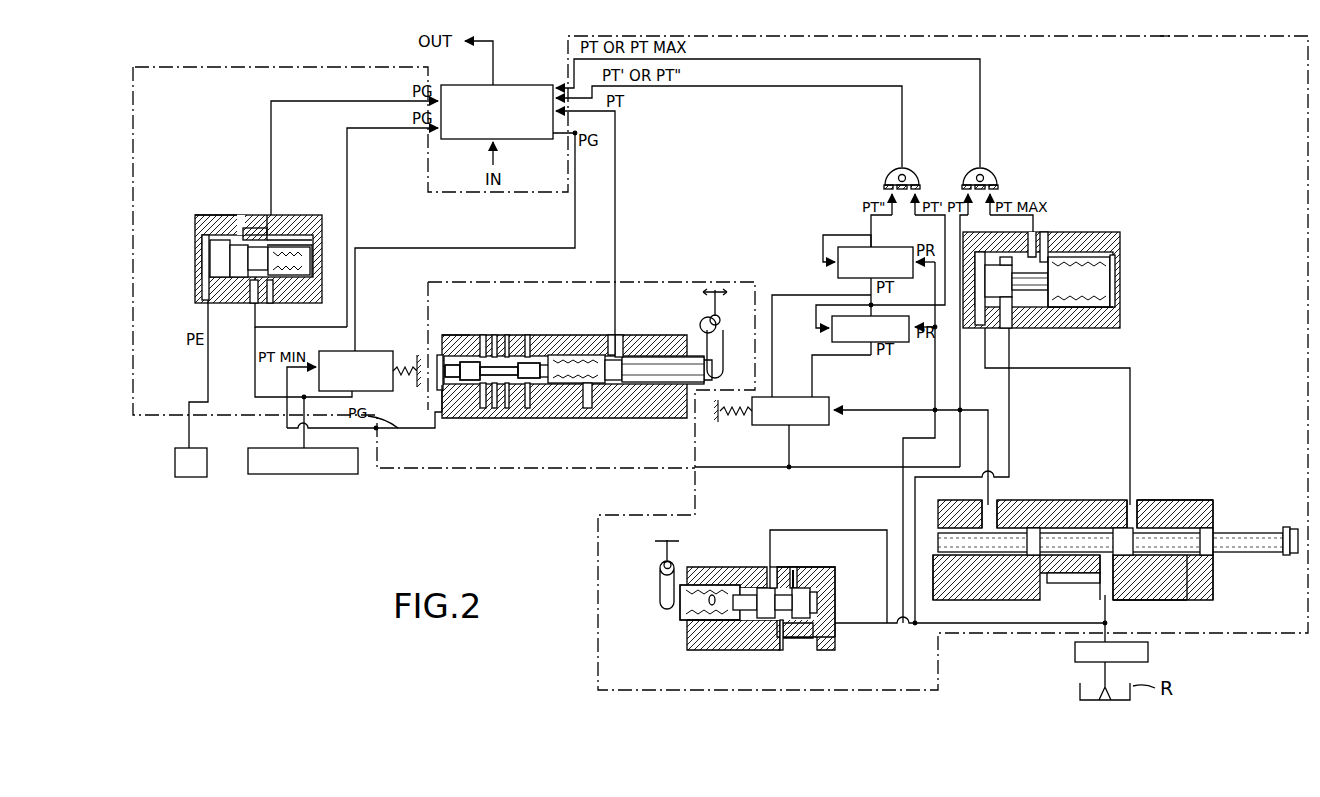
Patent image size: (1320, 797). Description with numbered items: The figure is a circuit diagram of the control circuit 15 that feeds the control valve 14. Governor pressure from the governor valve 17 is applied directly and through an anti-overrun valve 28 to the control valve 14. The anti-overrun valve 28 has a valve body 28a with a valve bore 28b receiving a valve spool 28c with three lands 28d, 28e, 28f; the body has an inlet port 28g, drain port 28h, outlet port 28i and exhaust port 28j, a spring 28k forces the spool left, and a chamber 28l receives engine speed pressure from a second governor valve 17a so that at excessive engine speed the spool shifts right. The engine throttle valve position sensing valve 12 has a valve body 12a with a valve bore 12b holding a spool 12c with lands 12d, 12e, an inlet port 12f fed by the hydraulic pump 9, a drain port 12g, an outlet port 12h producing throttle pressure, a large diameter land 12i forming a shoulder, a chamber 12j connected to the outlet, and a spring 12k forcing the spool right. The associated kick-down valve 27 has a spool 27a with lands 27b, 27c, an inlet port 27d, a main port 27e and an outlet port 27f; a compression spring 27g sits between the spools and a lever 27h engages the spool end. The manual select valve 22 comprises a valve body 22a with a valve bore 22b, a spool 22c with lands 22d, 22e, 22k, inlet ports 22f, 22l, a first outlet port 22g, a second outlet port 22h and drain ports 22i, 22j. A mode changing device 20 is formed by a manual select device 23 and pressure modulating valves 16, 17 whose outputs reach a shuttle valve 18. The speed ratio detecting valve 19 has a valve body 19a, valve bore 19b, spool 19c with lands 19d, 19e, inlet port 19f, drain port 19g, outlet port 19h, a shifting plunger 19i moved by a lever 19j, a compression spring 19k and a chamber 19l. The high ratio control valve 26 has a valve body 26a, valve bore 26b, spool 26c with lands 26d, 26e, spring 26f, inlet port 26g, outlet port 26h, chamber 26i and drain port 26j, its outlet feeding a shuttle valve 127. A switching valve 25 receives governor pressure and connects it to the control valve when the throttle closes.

The hydraulic pump 9 is at (1150, 653).
The engine throttle valve position sensing valve 12 is at (522, 334).
The valve body 12a is at (450, 334).
The valve bore 12b is at (458, 385).
The spool 12c is at (503, 385).
The land 12d is at (482, 345).
The land 12e is at (533, 388).
The inlet port 12f is at (496, 345).
The drain port 12g is at (532, 348).
The outlet port 12h is at (510, 385).
The large diameter land 12i is at (442, 385).
The chamber 12j is at (472, 388).
The spring 12k is at (438, 360).
The control valve 14 is at (516, 85).
The control circuit 15 is at (1161, 36).
The first pressure modulating valve 16 is at (832, 332).
The second pressure modulating valve 17 is at (315, 476).
The second governor valve 17a is at (205, 478).
The shuttle valve 18 is at (886, 172).
The speed ratio detecting valve 19 is at (672, 642).
The valve body 19a is at (818, 588).
The valve bore 19b is at (735, 620).
The spool 19c is at (780, 600).
The land 19d is at (748, 595).
The land 19e is at (814, 615).
The inlet port 19f is at (774, 575).
The drain port 19g is at (795, 580).
The outlet port 19h is at (781, 645).
The shifting plunger 19i is at (684, 612).
The lever 19j is at (668, 602).
The compression spring 19k is at (710, 595).
The chamber 19l is at (810, 605).
The mode changing device 20 is at (858, 418).
The manual select valve 22 is at (1196, 494).
The valve body 22a is at (1205, 522).
The valve bore 22b is at (1072, 530).
The spool 22c is at (998, 550).
The land 22d is at (1035, 538).
The land 22e is at (1135, 520).
The inlet port 22f is at (1108, 570).
The first outlet port 22g is at (1175, 497).
The second outlet port 22h is at (1000, 502).
The drain port 22i is at (1182, 572).
The drain port 22j is at (950, 565).
The land 22k is at (1212, 552).
The inlet port 22l is at (1050, 562).
The manual select device 23 is at (760, 426).
The switching valve 25 is at (363, 349).
The high ratio control valve 26 is at (1122, 242).
The valve body 26a is at (1116, 262).
The valve bore 26b is at (1116, 305).
The spool 26c is at (1020, 275).
The land 26d is at (1005, 300).
The land 26e is at (1098, 270).
The spring 26f is at (1100, 295).
The inlet port 26g is at (1016, 318).
The outlet port 26h is at (1030, 250).
The chamber 26i is at (976, 330).
The drain port 26j is at (1060, 245).
The kick-down valve 27 is at (656, 411).
The spool 27a is at (640, 353).
The land 27b is at (595, 400).
The land 27c is at (713, 370).
The inlet port 27d is at (605, 398).
The main port 27e is at (619, 336).
The outlet port 27f is at (611, 335).
The compression spring 27g is at (578, 405).
The lever 27h is at (716, 290).
The anti-overrun valve 28 is at (186, 232).
The valve body 28a is at (208, 226).
The valve bore 28b is at (222, 294).
The valve spool 28c is at (232, 258).
The land 28d is at (215, 250).
The land 28e is at (307, 238).
The land 28f is at (312, 248).
The inlet port 28g is at (256, 288).
The drain port 28h is at (271, 288).
The outlet port 28i is at (243, 230).
The exhaust port 28j is at (273, 228).
The spring 28k is at (315, 258).
The chamber 28l is at (205, 286).
The shuttle valve 127 is at (996, 172).